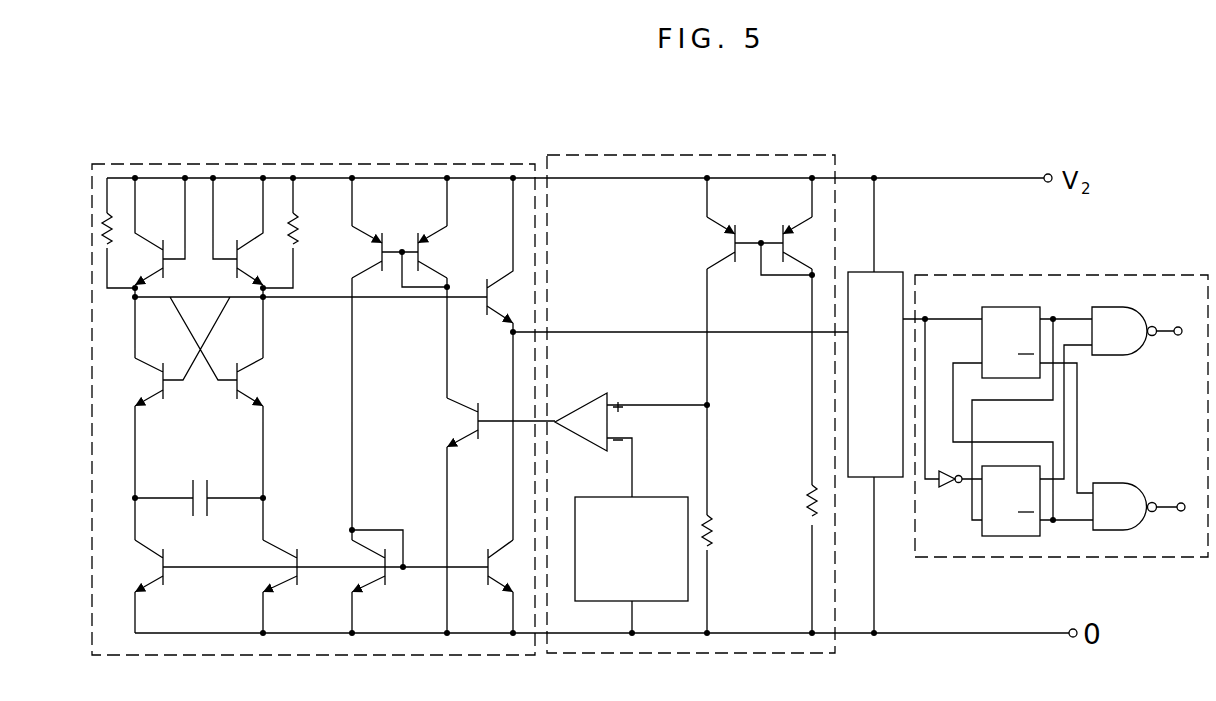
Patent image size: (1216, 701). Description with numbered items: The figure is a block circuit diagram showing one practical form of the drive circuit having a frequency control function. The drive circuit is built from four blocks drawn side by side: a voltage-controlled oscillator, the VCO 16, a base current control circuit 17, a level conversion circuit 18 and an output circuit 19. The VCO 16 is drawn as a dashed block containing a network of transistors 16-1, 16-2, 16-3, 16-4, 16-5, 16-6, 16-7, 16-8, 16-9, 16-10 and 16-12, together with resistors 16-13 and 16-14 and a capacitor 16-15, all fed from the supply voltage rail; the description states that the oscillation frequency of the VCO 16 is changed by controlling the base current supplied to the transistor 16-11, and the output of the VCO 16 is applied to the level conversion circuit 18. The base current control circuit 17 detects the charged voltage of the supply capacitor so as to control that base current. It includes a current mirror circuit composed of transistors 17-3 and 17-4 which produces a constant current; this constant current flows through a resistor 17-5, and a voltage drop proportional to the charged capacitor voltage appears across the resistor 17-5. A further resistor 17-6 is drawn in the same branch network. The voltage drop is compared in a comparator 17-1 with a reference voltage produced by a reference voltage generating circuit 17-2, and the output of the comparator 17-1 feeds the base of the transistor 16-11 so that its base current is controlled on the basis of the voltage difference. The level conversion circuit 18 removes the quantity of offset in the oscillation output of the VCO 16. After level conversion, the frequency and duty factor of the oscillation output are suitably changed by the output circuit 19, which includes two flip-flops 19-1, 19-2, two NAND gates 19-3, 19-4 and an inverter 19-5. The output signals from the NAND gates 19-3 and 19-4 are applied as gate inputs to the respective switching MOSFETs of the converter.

The VCO 16 is at (430, 655).
The transistor 16-1 is at (370, 586).
The transistor 16-2 is at (283, 586).
The transistor 16-3 is at (155, 586).
The transistor 16-4 is at (493, 588).
The transistor 16-5 is at (247, 236).
The transistor 16-6 is at (150, 236).
The transistor 16-7 is at (263, 386).
The transistor 16-8 is at (155, 397).
The transistor 16-9 is at (373, 253).
The transistor 16-10 is at (433, 258).
The transistor 16-11 is at (452, 413).
The transistor 16-12 is at (496, 318).
The resistor 16-13 is at (305, 228).
The resistor 16-14 is at (113, 222).
The capacitor 16-15 is at (202, 477).
The base current control circuit 17 is at (688, 653).
The comparator 17-1 is at (586, 402).
The reference voltage generating circuit 17-2 is at (662, 495).
The transistor 17-3 is at (712, 237).
The transistor 17-4 is at (789, 226).
The resistor 17-5 is at (712, 542).
The resistor 17-6 is at (806, 490).
The level conversion circuit 18 is at (893, 270).
The output circuit 19 is at (970, 557).
The flip-flop 19-1 is at (1020, 282).
The flip-flop 19-2 is at (1035, 537).
The NAND gate 19-3 is at (1128, 355).
The NAND gate 19-4 is at (1130, 483).
The inverter 19-5 is at (946, 487).